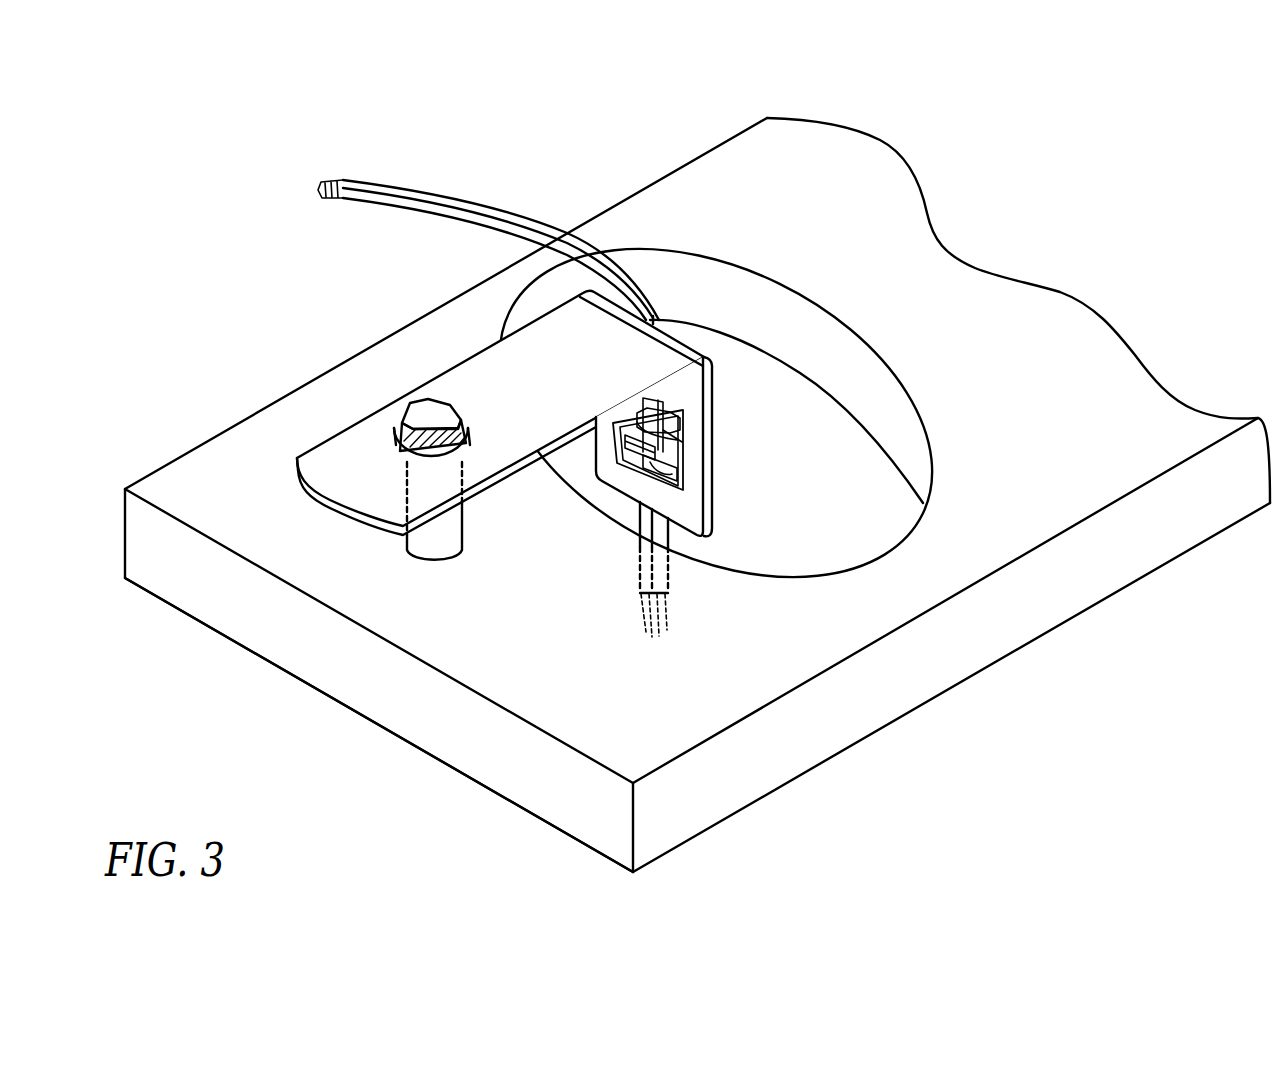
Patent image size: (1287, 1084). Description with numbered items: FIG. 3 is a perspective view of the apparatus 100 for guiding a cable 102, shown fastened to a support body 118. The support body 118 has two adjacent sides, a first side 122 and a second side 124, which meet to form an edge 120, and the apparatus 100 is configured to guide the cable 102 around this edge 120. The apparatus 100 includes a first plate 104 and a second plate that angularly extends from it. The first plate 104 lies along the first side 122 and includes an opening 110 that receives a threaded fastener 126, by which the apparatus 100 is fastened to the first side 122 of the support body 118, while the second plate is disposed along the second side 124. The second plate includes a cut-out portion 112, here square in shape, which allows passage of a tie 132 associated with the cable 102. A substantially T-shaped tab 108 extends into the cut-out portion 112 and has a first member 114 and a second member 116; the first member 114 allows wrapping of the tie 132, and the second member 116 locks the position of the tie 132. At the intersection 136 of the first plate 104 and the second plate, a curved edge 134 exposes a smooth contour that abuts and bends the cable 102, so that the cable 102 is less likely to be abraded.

The apparatus 100 is at (328, 410).
The cable 102 is at (425, 200).
The first plate 104 is at (532, 352).
The tab 108 is at (677, 410).
The opening 110 is at (407, 460).
The cut-out portion 112 is at (680, 423).
The first member 114 is at (670, 442).
The second member 116 is at (660, 483).
The support body 118 is at (697, 495).
The edge 120 is at (680, 272).
The first side 122 is at (673, 697).
The second side 124 is at (810, 338).
The threaded fastener 126 is at (423, 417).
The tie 132 is at (673, 448).
The curved edge 134 is at (650, 333).
The intersection 136 is at (708, 360).